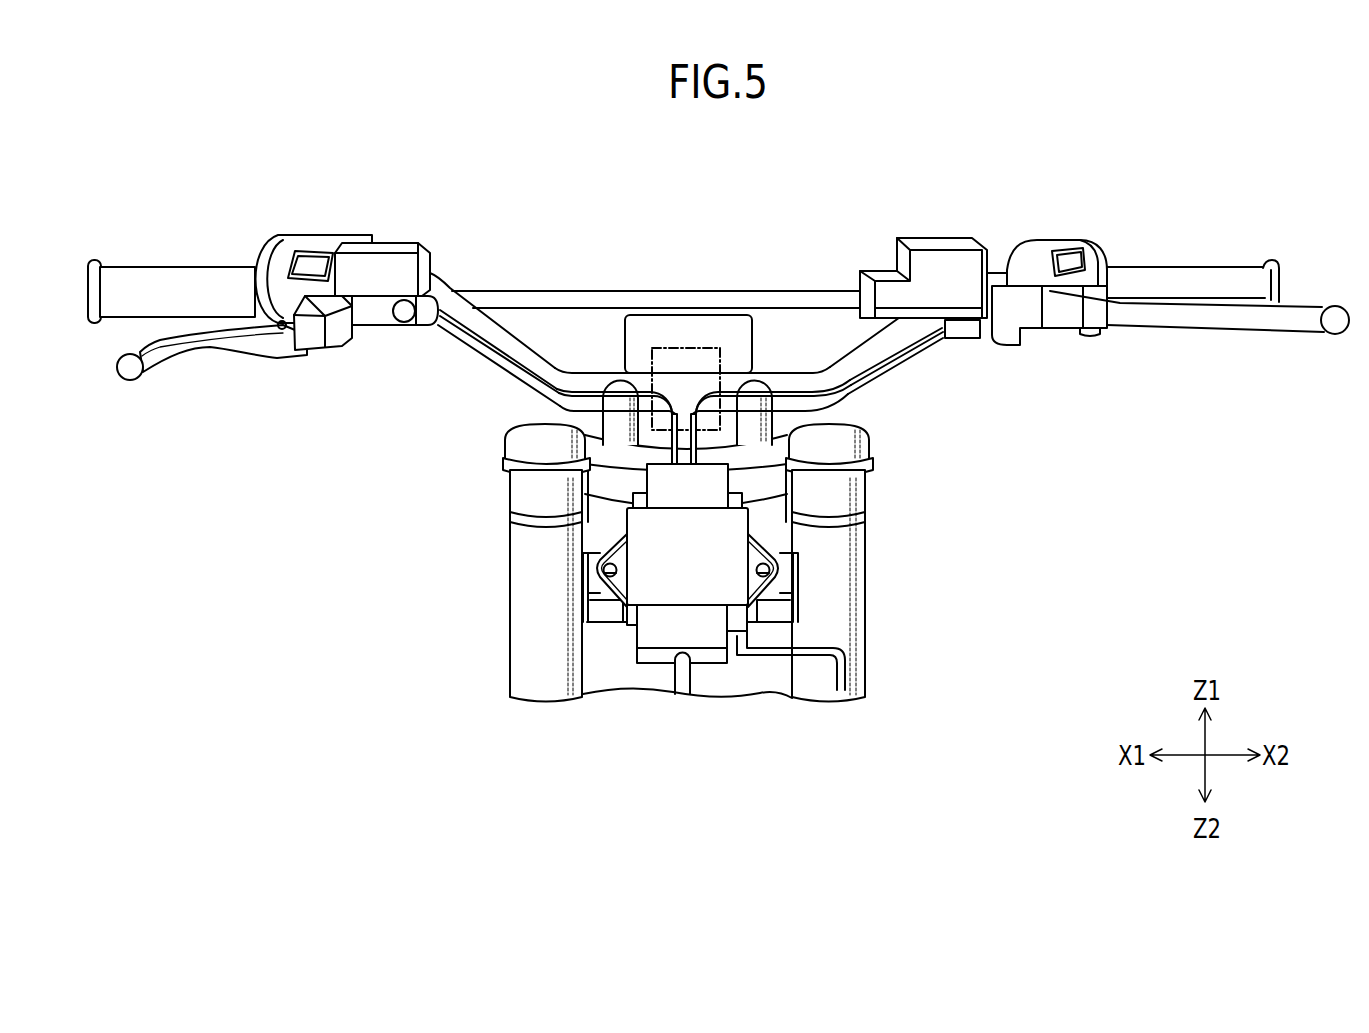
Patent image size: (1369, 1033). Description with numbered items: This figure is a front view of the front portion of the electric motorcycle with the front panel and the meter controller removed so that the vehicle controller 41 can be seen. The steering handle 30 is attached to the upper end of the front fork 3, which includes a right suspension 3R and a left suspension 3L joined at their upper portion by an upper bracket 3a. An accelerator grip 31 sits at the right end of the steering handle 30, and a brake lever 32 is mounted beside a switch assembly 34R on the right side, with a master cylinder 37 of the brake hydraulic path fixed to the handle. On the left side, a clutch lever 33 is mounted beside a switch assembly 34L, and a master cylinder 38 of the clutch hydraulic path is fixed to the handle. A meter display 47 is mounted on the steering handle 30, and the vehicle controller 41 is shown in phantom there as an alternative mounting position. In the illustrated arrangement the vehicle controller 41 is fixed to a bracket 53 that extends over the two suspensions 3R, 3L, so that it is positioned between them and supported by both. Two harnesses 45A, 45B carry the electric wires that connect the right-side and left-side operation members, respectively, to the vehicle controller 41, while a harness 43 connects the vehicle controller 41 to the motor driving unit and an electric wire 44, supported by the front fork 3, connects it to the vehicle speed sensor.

The front fork 3 is at (690, 563).
The upper bracket 3a is at (866, 452).
The right suspension 3R is at (520, 628).
The left suspension 3L is at (863, 632).
The steering handle 30 is at (718, 321).
The accelerator grip 31 is at (183, 283).
The brake lever 32 is at (212, 349).
The clutch lever 33 is at (1198, 317).
The switch assembly 34R is at (319, 240).
The switch assembly 34L is at (1048, 240).
The master cylinder 37 is at (391, 246).
The master cylinder 38 is at (940, 262).
The vehicle controller 41 is at (708, 345).
The harness 43 is at (677, 675).
The electric wire 44 is at (762, 658).
The harness 45A is at (503, 355).
The harness 45B is at (873, 357).
The meter display 47 is at (670, 323).
The bracket 53 is at (787, 583).